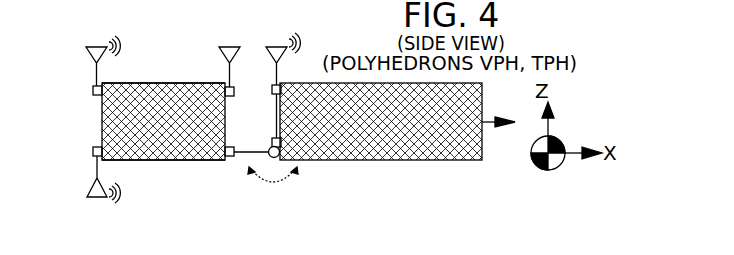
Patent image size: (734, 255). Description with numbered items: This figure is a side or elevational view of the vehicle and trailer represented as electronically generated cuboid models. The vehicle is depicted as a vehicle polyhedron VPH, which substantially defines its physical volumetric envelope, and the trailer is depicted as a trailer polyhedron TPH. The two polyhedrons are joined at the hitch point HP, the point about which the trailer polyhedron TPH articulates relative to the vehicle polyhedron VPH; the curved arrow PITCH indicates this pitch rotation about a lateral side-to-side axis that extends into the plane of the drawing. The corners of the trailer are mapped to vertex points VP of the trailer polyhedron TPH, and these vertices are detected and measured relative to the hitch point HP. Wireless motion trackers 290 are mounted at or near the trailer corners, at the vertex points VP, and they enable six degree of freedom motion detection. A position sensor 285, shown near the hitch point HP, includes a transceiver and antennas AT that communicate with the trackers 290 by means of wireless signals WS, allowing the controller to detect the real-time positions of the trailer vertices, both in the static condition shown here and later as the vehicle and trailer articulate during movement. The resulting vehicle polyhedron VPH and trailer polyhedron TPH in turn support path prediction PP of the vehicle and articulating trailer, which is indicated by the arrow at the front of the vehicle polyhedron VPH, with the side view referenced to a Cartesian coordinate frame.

The wireless motion tracker 290 is at (93, 89).
The position sensor 285 is at (276, 95).
The trailer polyhedron TPH is at (102, 133).
The vehicle polyhedron VPH is at (394, 160).
The vertex point VP is at (226, 86).
The antenna AT is at (87, 53).
The wireless signal WS is at (112, 40).
The hitch point HP is at (268, 157).
The pitch rotation PITCH is at (268, 183).
The path prediction PP is at (488, 123).